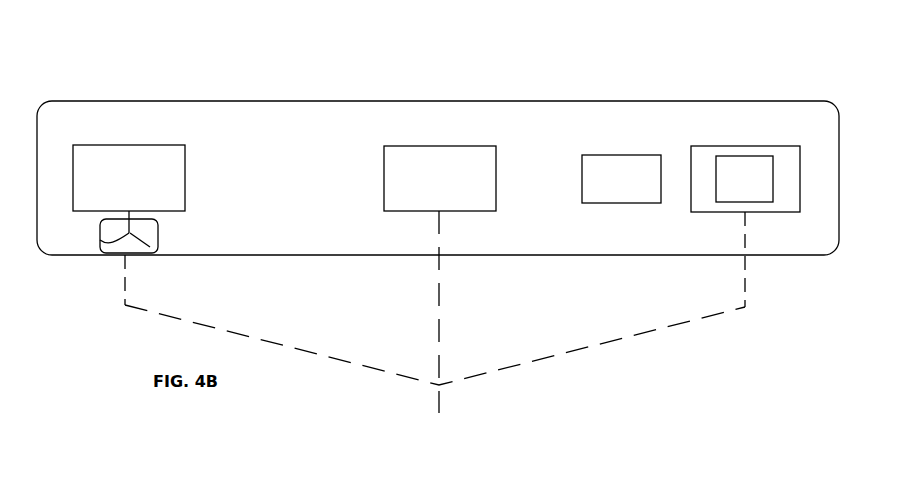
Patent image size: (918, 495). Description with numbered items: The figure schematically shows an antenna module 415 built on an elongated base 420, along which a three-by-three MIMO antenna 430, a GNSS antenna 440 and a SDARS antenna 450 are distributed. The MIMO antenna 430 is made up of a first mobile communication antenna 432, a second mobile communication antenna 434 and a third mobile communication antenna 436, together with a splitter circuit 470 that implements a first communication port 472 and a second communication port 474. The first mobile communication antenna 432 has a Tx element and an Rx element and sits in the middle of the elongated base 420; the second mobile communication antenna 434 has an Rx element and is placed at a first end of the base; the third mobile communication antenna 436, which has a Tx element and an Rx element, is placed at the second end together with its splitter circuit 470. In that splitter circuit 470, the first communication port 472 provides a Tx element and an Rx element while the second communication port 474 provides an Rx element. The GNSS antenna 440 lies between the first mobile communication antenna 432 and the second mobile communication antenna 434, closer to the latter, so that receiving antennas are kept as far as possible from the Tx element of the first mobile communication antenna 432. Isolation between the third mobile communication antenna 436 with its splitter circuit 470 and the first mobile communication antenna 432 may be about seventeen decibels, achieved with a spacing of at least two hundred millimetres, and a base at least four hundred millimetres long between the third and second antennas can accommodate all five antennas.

The antenna module 415 is at (237, 92).
The elongated base 420 is at (377, 100).
The 3×3 MIMO antenna 430 is at (439, 430).
The first mobile communication antenna 432 is at (496, 158).
The second mobile communication antenna 434 is at (800, 165).
The third mobile communication antenna 436 is at (185, 152).
The GNSS antenna 440 is at (617, 155).
The SDARS antenna 450 is at (726, 156).
The splitter circuit 470 is at (158, 225).
The first communication port 472 is at (100, 240).
The second communication port 474 is at (158, 240).